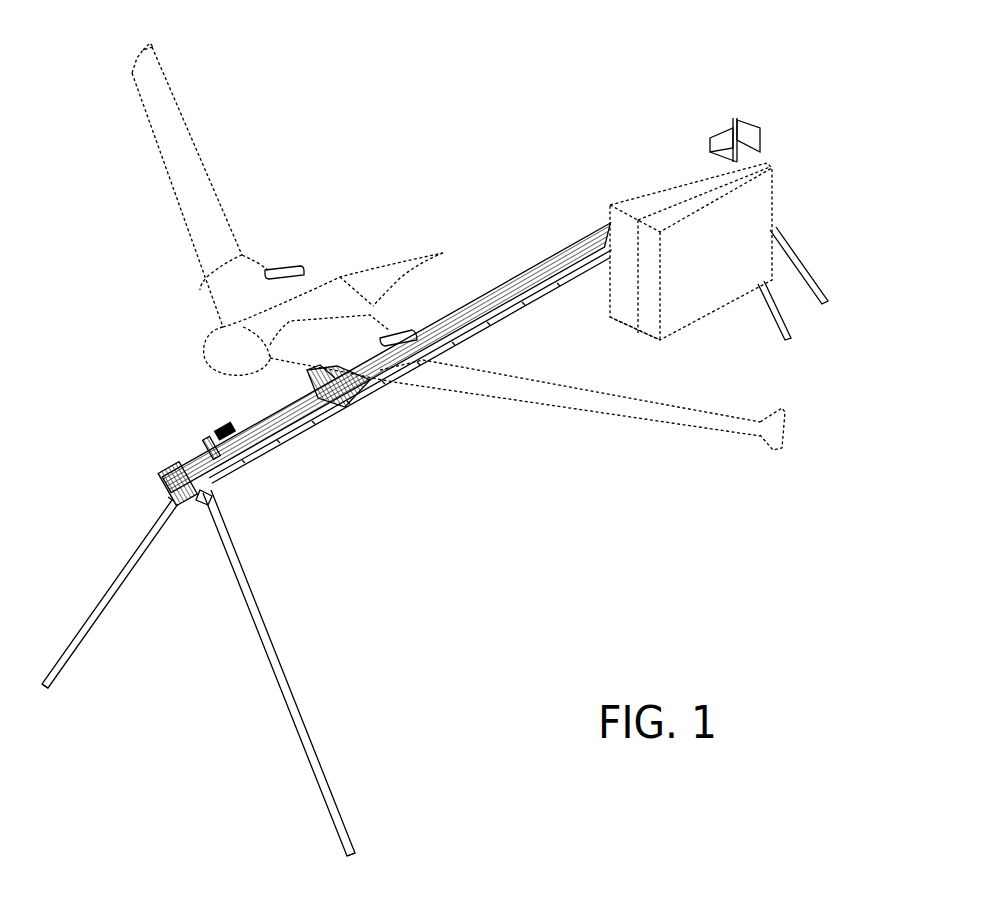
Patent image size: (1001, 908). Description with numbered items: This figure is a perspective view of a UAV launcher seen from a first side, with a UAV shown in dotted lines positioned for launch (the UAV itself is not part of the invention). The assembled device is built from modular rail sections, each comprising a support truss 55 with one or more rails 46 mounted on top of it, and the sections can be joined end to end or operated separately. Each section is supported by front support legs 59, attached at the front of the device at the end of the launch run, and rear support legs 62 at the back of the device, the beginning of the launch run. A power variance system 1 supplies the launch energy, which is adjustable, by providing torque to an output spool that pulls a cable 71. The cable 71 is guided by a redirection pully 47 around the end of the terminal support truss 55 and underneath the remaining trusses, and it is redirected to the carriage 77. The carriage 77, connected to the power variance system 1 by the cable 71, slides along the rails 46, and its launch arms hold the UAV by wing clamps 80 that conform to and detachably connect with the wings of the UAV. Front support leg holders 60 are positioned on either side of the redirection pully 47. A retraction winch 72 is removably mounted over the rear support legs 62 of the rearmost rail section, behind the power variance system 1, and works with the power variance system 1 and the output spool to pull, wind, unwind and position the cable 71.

The power variance system 1 is at (638, 177).
The rail 46 is at (528, 264).
The redirection pully 47 is at (158, 481).
The support truss 55 is at (198, 438).
The front support legs 59 is at (270, 673).
The front support leg holders 60 is at (232, 500).
The rear support legs 62 is at (788, 238).
The cable 71 is at (542, 320).
The retraction winch 72 is at (708, 118).
The carriage 77 is at (358, 404).
The wing clamps 80 is at (295, 258).